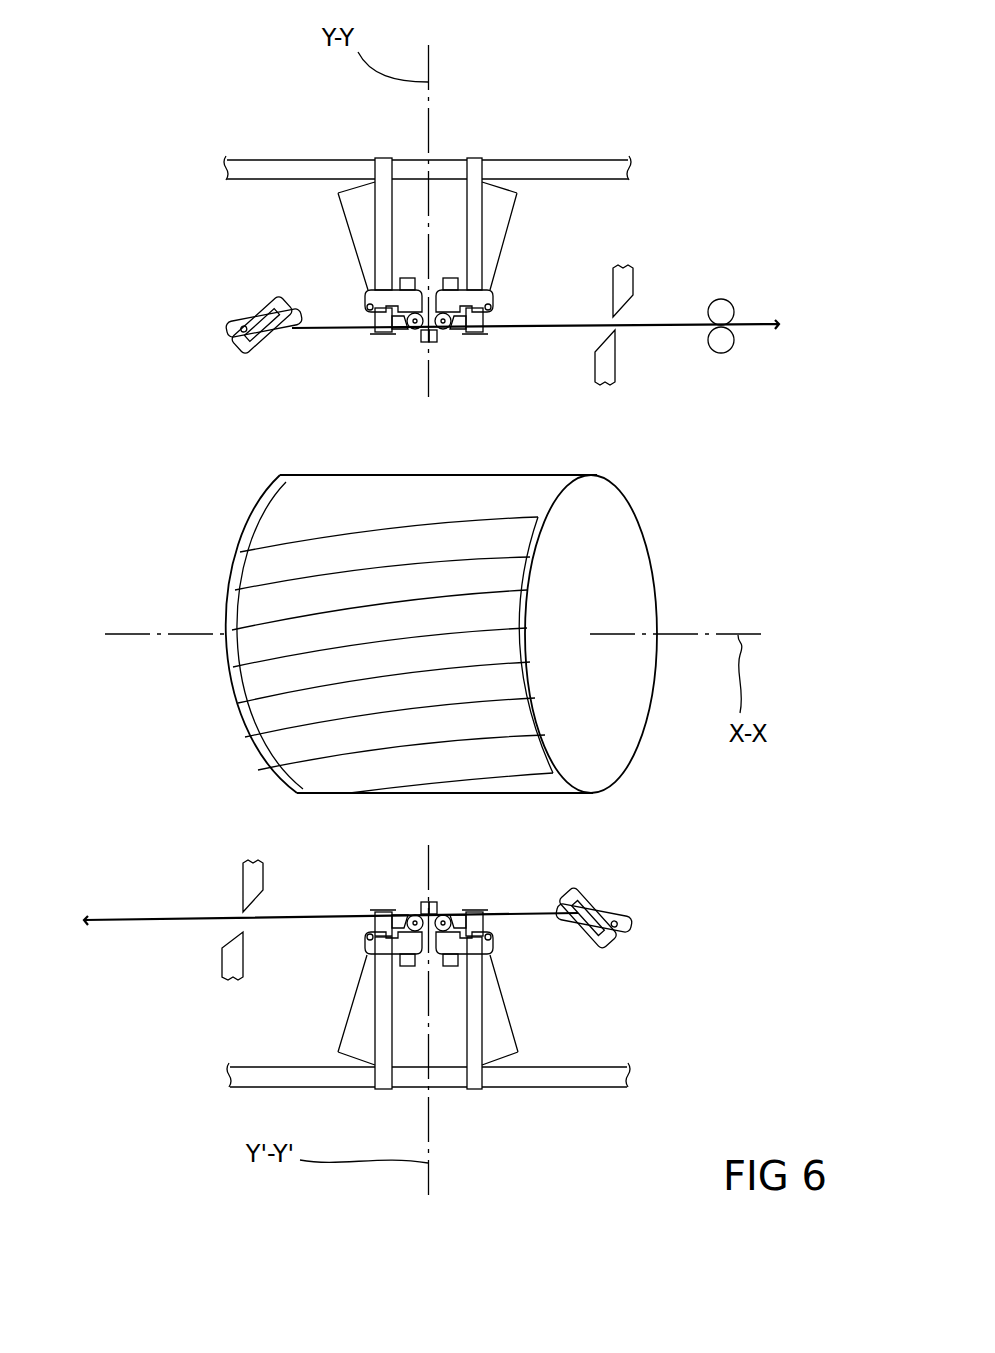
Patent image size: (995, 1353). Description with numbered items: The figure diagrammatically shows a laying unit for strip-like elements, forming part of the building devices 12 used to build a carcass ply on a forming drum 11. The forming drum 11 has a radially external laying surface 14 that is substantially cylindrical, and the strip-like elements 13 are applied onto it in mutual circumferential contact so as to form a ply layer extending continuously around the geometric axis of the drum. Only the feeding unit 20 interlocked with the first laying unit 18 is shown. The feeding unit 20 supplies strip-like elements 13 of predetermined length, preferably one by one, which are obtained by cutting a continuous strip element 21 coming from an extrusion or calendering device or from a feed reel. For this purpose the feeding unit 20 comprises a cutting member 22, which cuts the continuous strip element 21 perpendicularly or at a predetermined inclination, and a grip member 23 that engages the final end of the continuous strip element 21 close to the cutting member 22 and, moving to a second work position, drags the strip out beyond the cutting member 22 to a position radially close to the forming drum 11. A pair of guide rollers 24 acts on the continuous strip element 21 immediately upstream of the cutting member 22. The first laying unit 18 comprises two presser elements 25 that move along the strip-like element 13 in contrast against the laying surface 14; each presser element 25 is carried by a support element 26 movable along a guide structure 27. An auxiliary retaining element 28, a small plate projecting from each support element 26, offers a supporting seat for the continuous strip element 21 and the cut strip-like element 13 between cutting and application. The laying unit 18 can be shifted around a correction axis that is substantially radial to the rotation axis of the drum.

The forming drum 11 is at (630, 502).
The building devices 12 is at (657, 125).
The strip-like elements 13 is at (255, 570).
The radially external laying surface 14 is at (297, 505).
The first laying unit 18 is at (380, 350).
The feeding unit 20 is at (753, 357).
The continuous strip element 21 is at (333, 325).
The cutting member 22 is at (640, 275).
The grip member 23 is at (253, 308).
The guide rollers 24 is at (723, 303).
The presser element 25 is at (420, 327).
The support element 26 is at (358, 217).
The guide structure 27 is at (592, 165).
The auxiliary retaining element 28 is at (398, 338).